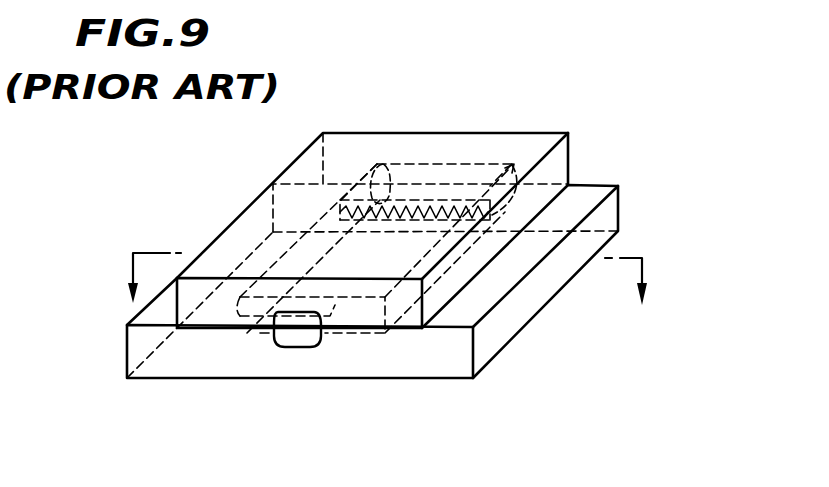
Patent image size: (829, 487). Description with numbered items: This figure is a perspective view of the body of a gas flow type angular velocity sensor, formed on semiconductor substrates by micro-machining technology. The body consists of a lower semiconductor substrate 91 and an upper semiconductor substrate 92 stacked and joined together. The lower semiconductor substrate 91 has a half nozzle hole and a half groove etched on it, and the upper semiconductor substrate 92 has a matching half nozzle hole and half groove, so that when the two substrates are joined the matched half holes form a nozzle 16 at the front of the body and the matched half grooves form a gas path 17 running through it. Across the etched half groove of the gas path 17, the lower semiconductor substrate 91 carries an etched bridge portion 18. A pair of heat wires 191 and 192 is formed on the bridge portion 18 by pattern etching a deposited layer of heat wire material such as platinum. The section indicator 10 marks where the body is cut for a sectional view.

The section line 10 is at (389, 284).
The nozzle 16 is at (300, 334).
The gas path 17 is at (358, 258).
The bridge portion 18 is at (423, 212).
The heat wire 191 is at (390, 200).
The heat wire 192 is at (473, 212).
The lower semiconductor substrate 91 is at (520, 308).
The upper semiconductor substrate 92 is at (556, 161).